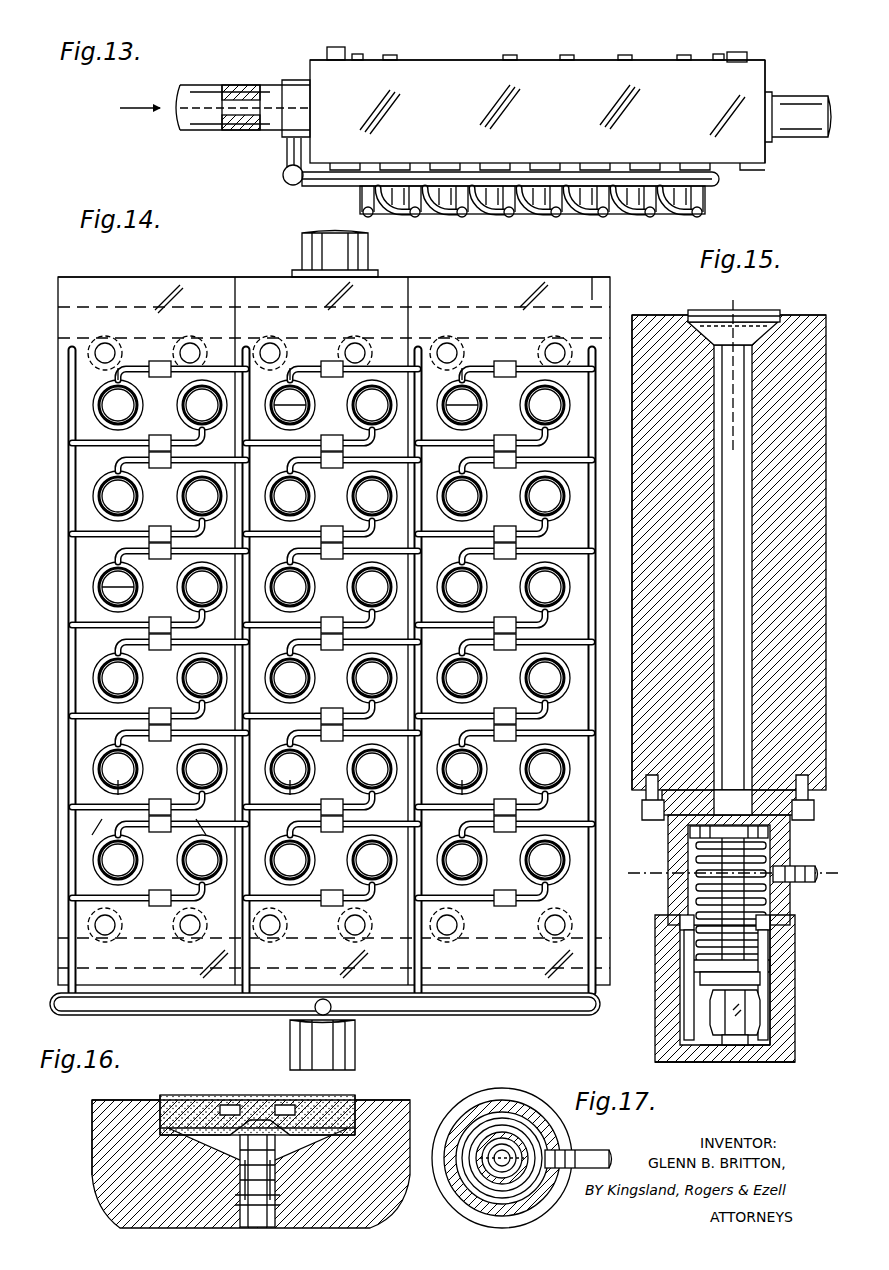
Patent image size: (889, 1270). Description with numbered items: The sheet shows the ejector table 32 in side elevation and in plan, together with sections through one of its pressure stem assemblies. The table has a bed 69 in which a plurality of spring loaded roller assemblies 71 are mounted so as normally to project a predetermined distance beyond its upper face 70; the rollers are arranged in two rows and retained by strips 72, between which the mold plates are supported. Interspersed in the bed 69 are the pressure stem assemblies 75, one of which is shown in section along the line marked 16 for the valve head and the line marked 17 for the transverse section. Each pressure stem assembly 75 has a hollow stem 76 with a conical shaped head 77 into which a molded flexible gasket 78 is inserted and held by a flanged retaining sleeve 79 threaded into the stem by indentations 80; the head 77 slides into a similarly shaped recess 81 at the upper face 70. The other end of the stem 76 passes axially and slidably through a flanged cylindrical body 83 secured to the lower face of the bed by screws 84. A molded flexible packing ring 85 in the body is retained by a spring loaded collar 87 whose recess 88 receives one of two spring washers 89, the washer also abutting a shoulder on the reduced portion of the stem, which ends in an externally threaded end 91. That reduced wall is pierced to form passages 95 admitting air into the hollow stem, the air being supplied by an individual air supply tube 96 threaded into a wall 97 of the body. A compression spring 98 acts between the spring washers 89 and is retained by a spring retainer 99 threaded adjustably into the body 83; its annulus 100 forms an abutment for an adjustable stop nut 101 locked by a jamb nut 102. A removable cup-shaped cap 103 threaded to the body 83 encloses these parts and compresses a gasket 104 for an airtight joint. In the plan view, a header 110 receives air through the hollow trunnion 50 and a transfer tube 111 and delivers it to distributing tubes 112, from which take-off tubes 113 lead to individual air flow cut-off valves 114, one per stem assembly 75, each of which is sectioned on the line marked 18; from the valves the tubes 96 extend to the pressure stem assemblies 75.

In FIG. 15, the section line 16- 16 is at (735, 302).
In FIG. 15, the section line 17- 17 is at (632, 888).
In FIG. 14, the section line 18- 18 is at (108, 806).
In FIG. 13, the ejector table 32 is at (772, 168).
In FIG. 14, the ejector table 32 is at (234, 275).
In FIG. 15, the ejector table 32 is at (800, 315).
In FIG. 16, the ejector table 32 is at (90, 1188).
In FIG. 13, the hollow trunnion 50 is at (228, 84).
In FIG. 14, the hollow trunnion 50 is at (360, 1050).
In FIG. 13, the bed 69 is at (760, 80).
In FIG. 14, the bed 69 is at (168, 292).
In FIG. 15, the bed 69 is at (650, 322).
In FIG. 16, the bed 69 is at (118, 1142).
In FIG. 13, the upper face 70 is at (650, 60).
In FIG. 15, the upper face 70 is at (810, 315).
In FIG. 16, the upper face 70 is at (118, 1100).
In FIG. 13, the spring loaded roller assemblies 71 is at (362, 53).
In FIG. 14, the spring loaded roller assemblies 71 is at (185, 348).
In FIG. 13, the strips 72 is at (330, 48).
In FIG. 14, the strips 72 is at (440, 300).
In FIG. 13, the pressure stem assembly 75 is at (412, 222).
In FIG. 14, the pressure stem assembly 75 is at (125, 385).
In FIG. 15, the pressure stem assembly 75 is at (792, 1068).
In FIG. 16, the pressure stem assembly 75 is at (212, 1084).
In FIG. 17, the pressure stem assembly 75 is at (528, 1088).
In FIG. 15, the hollow stem 76 is at (740, 418).
In FIG. 16, the hollow stem 76 is at (290, 1208).
In FIG. 17, the hollow stem 76 is at (492, 1170).
In FIG. 15, the conical shaped head 77 is at (705, 325).
In FIG. 16, the conical shaped head 77 is at (355, 1102).
In FIG. 13, the molded flexible gasket 78 is at (515, 56).
In FIG. 15, the molded flexible gasket 78 is at (765, 310).
In FIG. 16, the molded flexible gasket 78 is at (205, 1098).
In FIG. 16, the flanged retaining sleeve 79 is at (232, 1164).
In FIG. 16, the indentations 80 is at (285, 1105).
In FIG. 13, the recess 81 is at (742, 166).
In FIG. 14, the recess 81 is at (592, 300).
In FIG. 15, the recess 81 is at (710, 320).
In FIG. 16, the recess 81 is at (200, 1142).
In FIG. 15, the flanged cylindrical body 83 is at (670, 900).
In FIG. 17, the flanged cylindrical body 83 is at (470, 1210).
In FIG. 14, the screws 84 is at (190, 498).
In FIG. 15, the screws 84 is at (668, 812).
In FIG. 15, the molded flexible packing ring 85 is at (810, 820).
In FIG. 15, the spring loaded collar 87 is at (692, 832).
In FIG. 15, the recess 88 is at (696, 850).
In FIG. 15, the spring washers 89 is at (772, 840).
In FIG. 17, the spring washers 89 is at (500, 1118).
In FIG. 15, the externally threaded end 91 is at (748, 1062).
In FIG. 17, the passages 95 is at (530, 1145).
In FIG. 13, the air supply tube 96 is at (385, 212).
In FIG. 14, the air supply tube 96 is at (175, 790).
In FIG. 15, the air supply tube 96 is at (805, 884).
In FIG. 17, the air supply tube 96 is at (612, 1155).
In FIG. 15, the wall 97 is at (792, 925).
In FIG. 17, the wall 97 is at (540, 1105).
In FIG. 15, the compression spring 98 is at (680, 925).
In FIG. 17, the compression spring 98 is at (490, 1180).
In FIG. 15, the spring retainer 99 is at (686, 975).
In FIG. 17, the spring retainer 99 is at (480, 1125).
In FIG. 15, the annulus 100 is at (762, 985).
In FIG. 15, the adjustable stop nut 101 is at (708, 1012).
In FIG. 15, the jamb nut 102 is at (750, 1040).
In FIG. 13, the cup-shaped cap 103 is at (400, 190).
In FIG. 14, the cup-shaped cap 103 is at (118, 595).
In FIG. 15, the cup-shaped cap 103 is at (765, 1062).
In FIG. 17, the cup-shaped cap 103 is at (492, 1090).
In FIG. 15, the gasket 104 is at (778, 948).
In FIG. 13, the header 110 is at (284, 178).
In FIG. 14, the header 110 is at (345, 1018).
In FIG. 13, the transfer tube 111 is at (285, 155).
In FIG. 14, the transfer tube 111 is at (292, 1030).
In FIG. 13, the distributing tubes 112 is at (322, 182).
In FIG. 14, the distributing tubes 112 is at (55, 995).
In FIG. 13, the take-off tubes 113 is at (362, 196).
In FIG. 14, the take-off tubes 113 is at (80, 450).
In FIG. 13, the air flow cut-off valves 114 is at (415, 218).
In FIG. 14, the air flow cut-off valves 114 is at (160, 378).